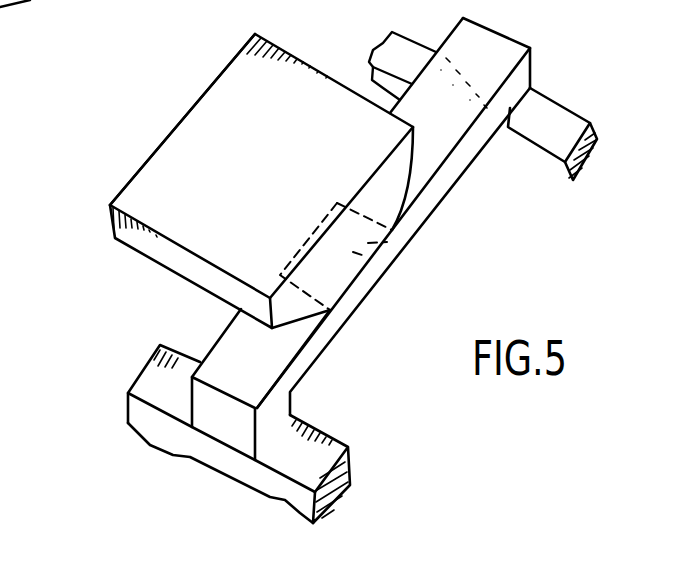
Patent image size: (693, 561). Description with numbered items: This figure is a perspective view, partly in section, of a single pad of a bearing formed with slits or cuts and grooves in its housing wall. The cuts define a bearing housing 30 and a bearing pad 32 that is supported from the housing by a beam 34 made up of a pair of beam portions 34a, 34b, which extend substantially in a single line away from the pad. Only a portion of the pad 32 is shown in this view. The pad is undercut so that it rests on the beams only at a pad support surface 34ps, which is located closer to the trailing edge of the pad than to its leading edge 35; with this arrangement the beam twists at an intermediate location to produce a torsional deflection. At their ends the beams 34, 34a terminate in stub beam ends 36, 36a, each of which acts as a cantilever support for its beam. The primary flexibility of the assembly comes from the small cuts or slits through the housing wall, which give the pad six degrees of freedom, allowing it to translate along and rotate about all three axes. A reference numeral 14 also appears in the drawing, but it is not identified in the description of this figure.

The component of adjacent figure 14 is at (73, 0).
The bearing housing 30 is at (390, 269).
The bearing pad 32 is at (236, 131).
The beam 34 is at (376, 237).
The beam portion 34a is at (485, 43).
The beam portion 34b is at (273, 355).
The pad support surface 34ps is at (400, 247).
The leading edge 35 is at (172, 128).
The stub beam end 36 is at (280, 412).
The stub beam end 36a is at (532, 88).